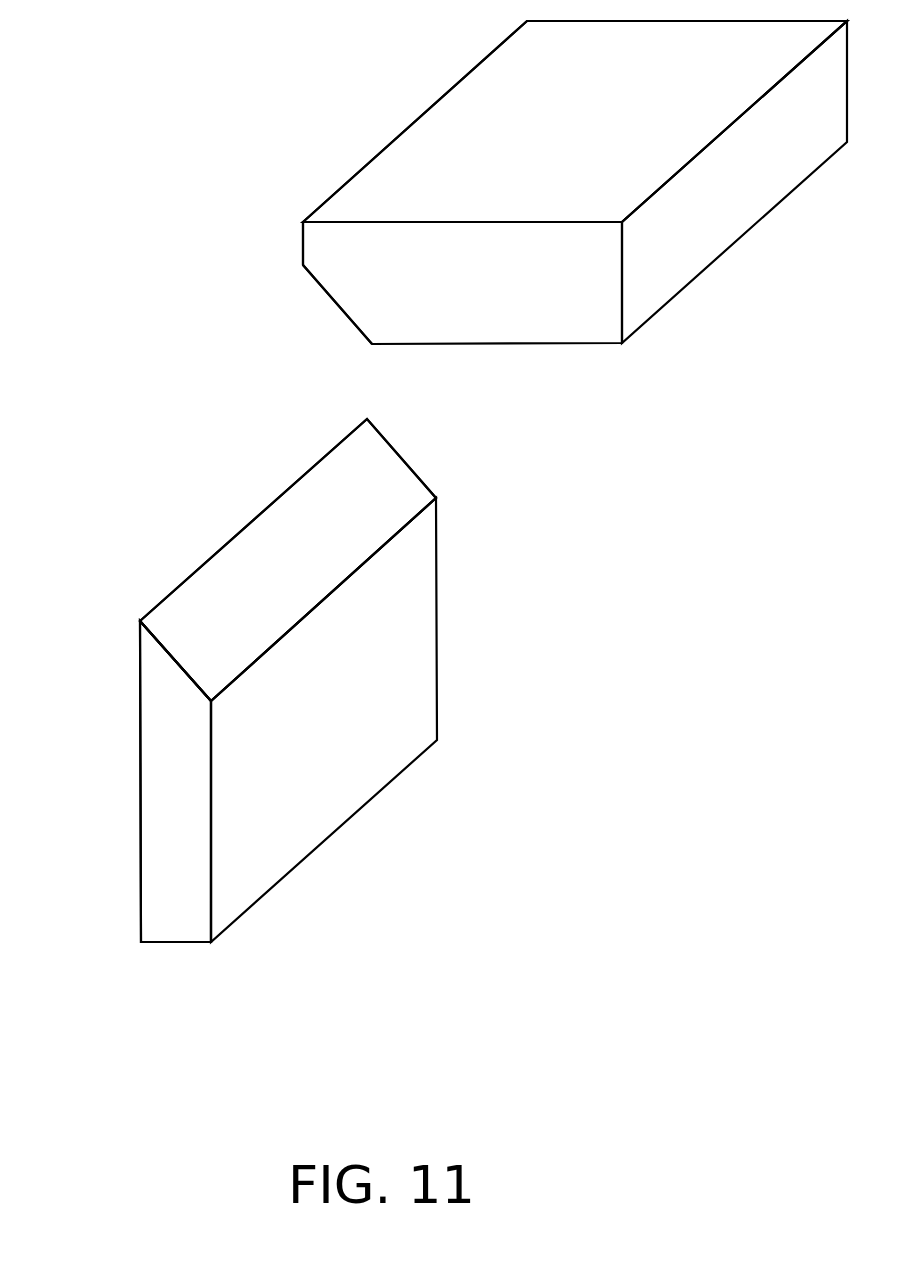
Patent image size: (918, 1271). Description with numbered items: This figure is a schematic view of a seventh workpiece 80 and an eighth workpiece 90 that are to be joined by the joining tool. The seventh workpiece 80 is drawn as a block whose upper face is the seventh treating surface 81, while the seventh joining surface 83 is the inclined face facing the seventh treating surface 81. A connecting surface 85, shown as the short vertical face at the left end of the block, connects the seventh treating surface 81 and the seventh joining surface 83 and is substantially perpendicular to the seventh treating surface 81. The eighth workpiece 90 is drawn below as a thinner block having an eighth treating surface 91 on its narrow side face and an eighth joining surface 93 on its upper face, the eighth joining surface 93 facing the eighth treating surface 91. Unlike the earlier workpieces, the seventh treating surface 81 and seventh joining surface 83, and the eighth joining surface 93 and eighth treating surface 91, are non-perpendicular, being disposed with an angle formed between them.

The seventh workpiece 80 is at (532, 179).
The seventh treating surface 81 is at (507, 105).
The seventh joining surface 83 is at (326, 313).
The connecting surface 85 is at (290, 243).
The eighth workpiece 90 is at (227, 680).
The eighth treating surface 91 is at (128, 743).
The eighth joining surface 93 is at (270, 555).